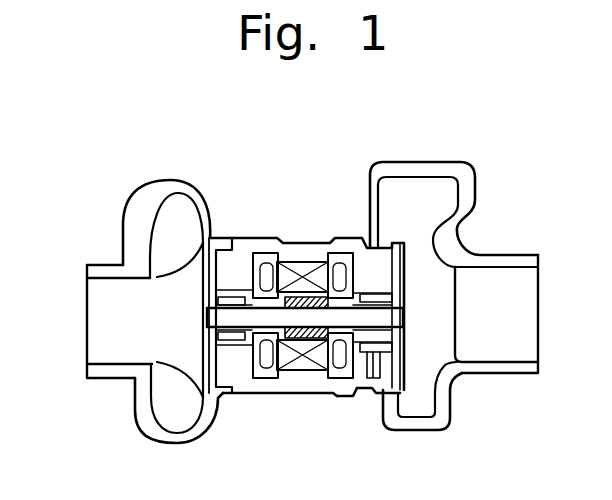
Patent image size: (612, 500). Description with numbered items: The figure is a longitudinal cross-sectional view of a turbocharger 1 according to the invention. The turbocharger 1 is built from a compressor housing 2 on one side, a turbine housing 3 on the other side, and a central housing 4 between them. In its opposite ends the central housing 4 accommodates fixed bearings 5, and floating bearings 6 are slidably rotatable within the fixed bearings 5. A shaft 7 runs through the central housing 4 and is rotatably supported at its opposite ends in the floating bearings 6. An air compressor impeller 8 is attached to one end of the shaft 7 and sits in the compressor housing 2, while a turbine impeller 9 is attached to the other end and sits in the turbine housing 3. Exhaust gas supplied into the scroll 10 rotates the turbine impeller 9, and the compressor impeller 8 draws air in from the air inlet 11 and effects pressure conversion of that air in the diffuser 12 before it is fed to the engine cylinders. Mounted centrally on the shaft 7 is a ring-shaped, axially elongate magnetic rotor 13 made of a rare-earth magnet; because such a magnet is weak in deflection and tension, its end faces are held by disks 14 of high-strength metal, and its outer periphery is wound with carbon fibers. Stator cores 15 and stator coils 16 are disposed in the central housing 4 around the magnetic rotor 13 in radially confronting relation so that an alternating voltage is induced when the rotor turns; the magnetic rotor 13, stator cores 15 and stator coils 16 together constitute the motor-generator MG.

The turbocharger 1 is at (226, 191).
The compressor housing 2 is at (128, 211).
The turbine housing 3 is at (470, 209).
The central housing 4 is at (283, 248).
The fixed bearings 5 is at (262, 346).
The floating bearings 6 is at (228, 340).
The shaft 7 is at (257, 248).
The air compressor impeller 8 is at (170, 360).
The turbine impeller 9 is at (448, 357).
The scroll 10 is at (445, 185).
The air inlet 11 is at (88, 305).
The diffuser 12 is at (160, 205).
The magnetic rotor 13 is at (293, 372).
The disks 14 is at (262, 372).
The stator cores 15 is at (296, 280).
The stator coils 16 is at (347, 367).
The motor-generator MG is at (306, 378).